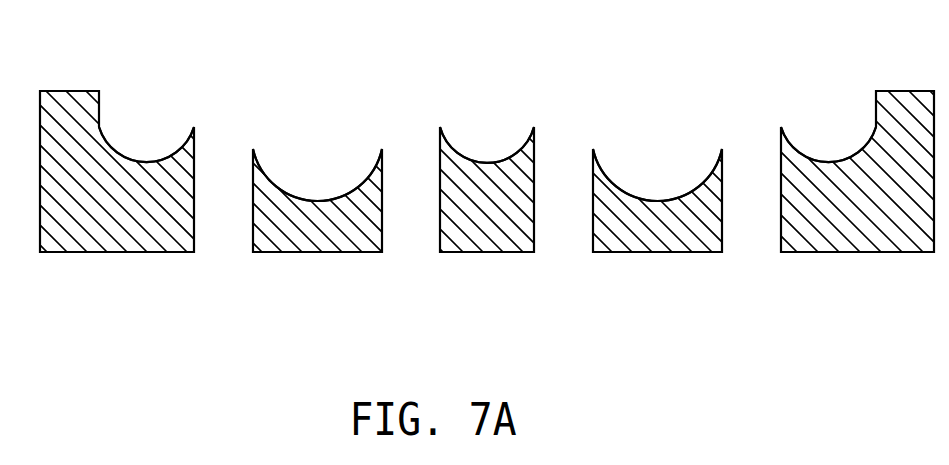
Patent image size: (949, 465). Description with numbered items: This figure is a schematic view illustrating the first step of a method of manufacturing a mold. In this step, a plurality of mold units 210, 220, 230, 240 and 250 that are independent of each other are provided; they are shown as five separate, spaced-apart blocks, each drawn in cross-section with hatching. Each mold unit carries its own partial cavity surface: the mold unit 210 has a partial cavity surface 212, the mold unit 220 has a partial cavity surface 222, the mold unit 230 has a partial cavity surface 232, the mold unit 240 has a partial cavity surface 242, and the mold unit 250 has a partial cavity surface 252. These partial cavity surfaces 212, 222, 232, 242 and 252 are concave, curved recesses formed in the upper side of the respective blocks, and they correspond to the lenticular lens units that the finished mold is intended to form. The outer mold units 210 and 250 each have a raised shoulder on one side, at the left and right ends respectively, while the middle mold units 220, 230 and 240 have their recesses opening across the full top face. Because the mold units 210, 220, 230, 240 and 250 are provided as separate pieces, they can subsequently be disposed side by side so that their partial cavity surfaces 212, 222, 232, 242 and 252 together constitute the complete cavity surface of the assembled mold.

The mold unit 210 is at (128, 238).
The partial cavity surface 212 is at (142, 160).
The mold unit 220 is at (316, 238).
The partial cavity surface 222 is at (318, 200).
The mold unit 230 is at (485, 238).
The partial cavity surface 232 is at (480, 160).
The mold unit 240 is at (654, 238).
The partial cavity surface 242 is at (657, 200).
The mold unit 250 is at (863, 238).
The partial cavity surface 252 is at (835, 160).